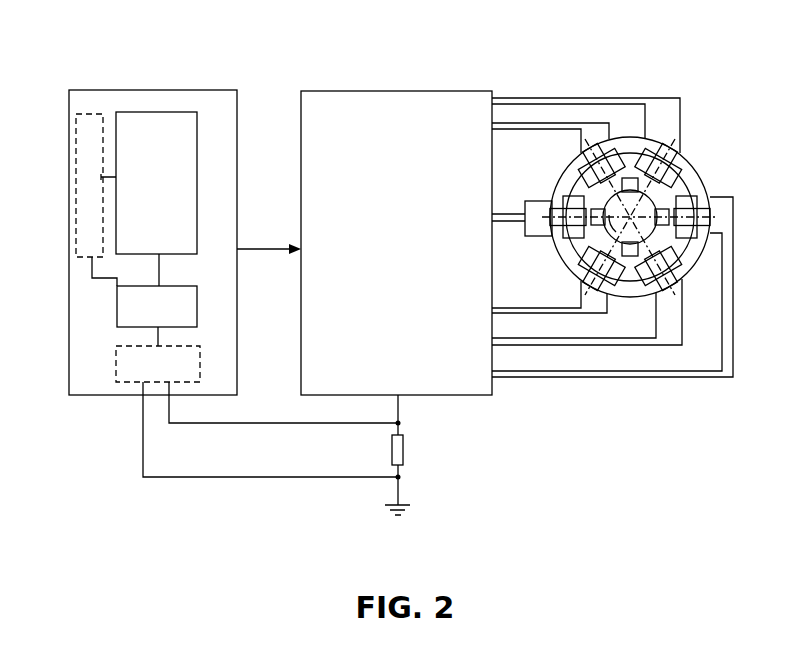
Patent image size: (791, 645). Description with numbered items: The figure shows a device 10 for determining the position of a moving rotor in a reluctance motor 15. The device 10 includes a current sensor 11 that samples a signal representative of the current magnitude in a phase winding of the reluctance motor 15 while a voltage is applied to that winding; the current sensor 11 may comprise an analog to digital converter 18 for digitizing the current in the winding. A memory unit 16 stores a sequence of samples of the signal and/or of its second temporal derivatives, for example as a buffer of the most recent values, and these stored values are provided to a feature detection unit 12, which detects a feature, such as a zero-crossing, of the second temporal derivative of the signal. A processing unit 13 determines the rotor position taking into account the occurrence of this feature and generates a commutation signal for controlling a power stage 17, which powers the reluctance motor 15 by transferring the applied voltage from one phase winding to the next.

The device 10 is at (260, 69).
The current sensor 11 is at (403, 450).
The feature detection unit 12 is at (117, 310).
The processing unit 13 is at (156, 112).
The reluctance motor 15 is at (722, 143).
The memory unit 16 is at (78, 113).
The power stage 17 is at (340, 90).
The analog to digital converter 18 is at (116, 360).